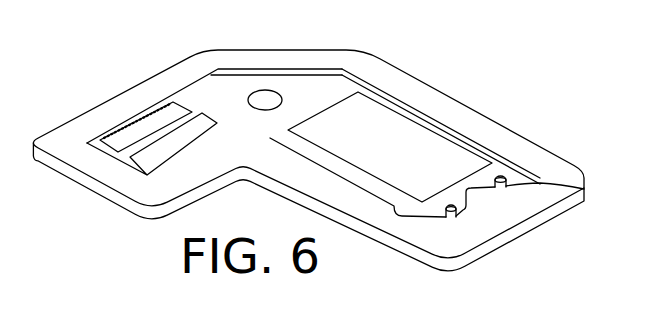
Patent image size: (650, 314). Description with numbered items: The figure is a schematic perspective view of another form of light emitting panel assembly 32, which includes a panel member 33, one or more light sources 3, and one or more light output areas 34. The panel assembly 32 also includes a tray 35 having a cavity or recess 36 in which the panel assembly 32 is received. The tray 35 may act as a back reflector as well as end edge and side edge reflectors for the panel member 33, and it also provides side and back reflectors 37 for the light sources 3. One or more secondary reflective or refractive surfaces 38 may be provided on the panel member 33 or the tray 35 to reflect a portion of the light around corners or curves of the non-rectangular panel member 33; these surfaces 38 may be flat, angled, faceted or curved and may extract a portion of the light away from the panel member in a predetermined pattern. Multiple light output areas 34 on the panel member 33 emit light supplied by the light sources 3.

The light source 3 is at (456, 214).
The light emitting panel assembly 32 is at (431, 124).
The panel member 33 is at (335, 88).
The light output areas 34 is at (268, 98).
The tray 35 is at (137, 196).
The cavity or recess 36 is at (478, 147).
The side and/or back reflectors 37 is at (447, 219).
The secondary reflective or refractive surfaces 38 is at (296, 68).